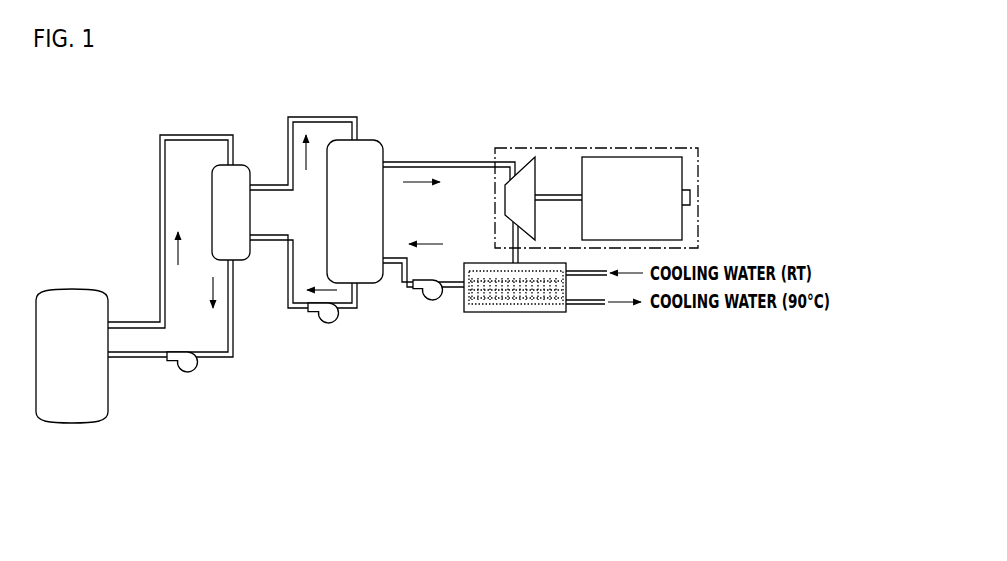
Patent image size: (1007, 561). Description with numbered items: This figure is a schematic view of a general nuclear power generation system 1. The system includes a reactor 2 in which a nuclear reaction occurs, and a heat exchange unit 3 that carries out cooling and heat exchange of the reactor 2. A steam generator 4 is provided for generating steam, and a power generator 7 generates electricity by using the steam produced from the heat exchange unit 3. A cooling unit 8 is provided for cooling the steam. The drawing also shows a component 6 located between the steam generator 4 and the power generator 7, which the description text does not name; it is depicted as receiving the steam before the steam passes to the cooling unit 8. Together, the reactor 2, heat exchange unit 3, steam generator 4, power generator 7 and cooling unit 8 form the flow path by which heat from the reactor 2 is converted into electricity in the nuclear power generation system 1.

The nuclear power generation system 1 is at (672, 100).
The reactor 2 is at (102, 418).
The heat exchange unit 3 is at (247, 167).
The steam generator 4 is at (377, 140).
The turbine 6 is at (537, 178).
The power generator 7 is at (597, 147).
The cooling unit 8 is at (495, 312).